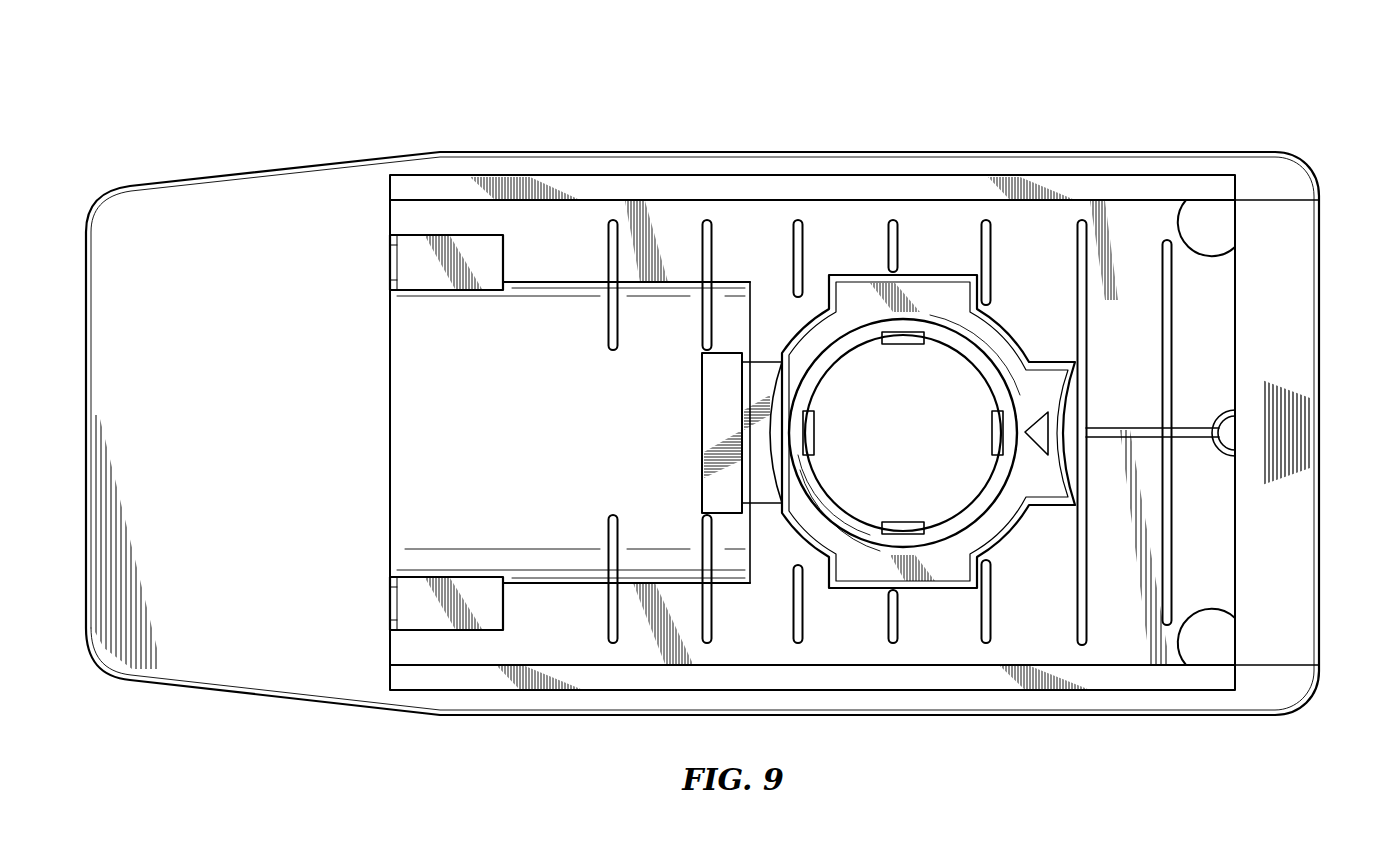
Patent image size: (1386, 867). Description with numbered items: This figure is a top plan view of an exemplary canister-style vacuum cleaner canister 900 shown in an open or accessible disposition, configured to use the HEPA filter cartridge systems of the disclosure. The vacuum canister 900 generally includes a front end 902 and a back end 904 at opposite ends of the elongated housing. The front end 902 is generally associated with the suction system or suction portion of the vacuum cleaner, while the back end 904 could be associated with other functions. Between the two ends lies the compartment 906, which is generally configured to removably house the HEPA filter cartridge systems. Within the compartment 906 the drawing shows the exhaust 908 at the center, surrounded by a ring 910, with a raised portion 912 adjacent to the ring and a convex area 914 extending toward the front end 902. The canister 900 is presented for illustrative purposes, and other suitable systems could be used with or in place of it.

The vacuum cleaner canister 900 is at (536, 80).
The front end 902 is at (193, 176).
The back end 904 is at (1327, 262).
The compartment 906 is at (1018, 607).
The exhaust 908 is at (888, 446).
The ring 910 is at (866, 598).
The raised portion 912 is at (718, 396).
The convex area 914 is at (505, 446).